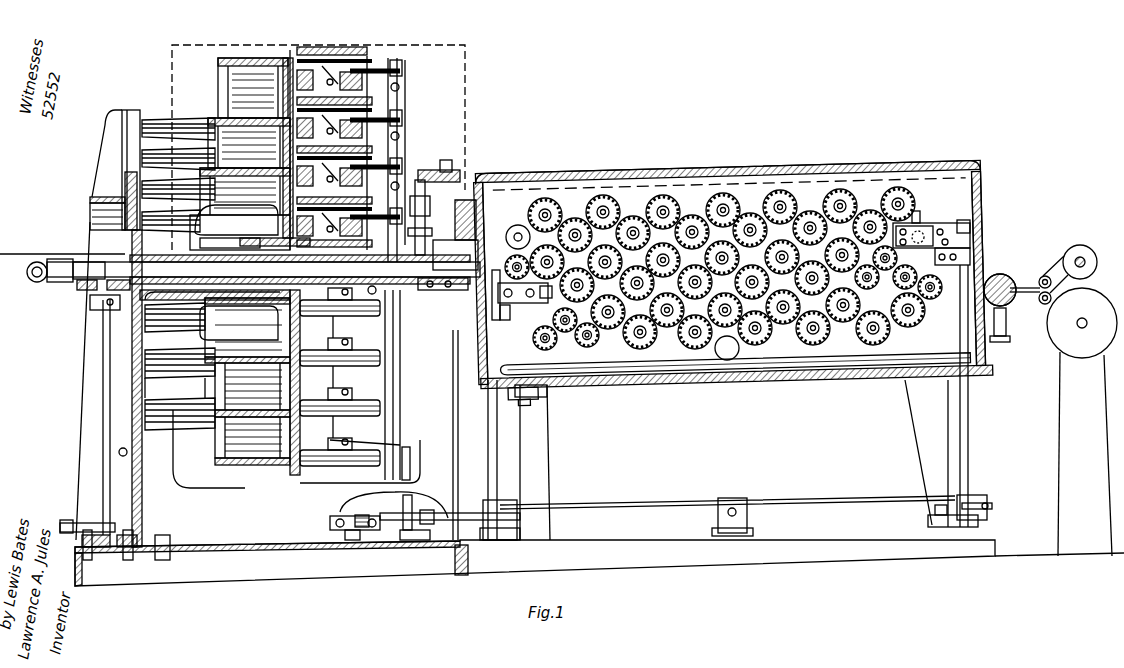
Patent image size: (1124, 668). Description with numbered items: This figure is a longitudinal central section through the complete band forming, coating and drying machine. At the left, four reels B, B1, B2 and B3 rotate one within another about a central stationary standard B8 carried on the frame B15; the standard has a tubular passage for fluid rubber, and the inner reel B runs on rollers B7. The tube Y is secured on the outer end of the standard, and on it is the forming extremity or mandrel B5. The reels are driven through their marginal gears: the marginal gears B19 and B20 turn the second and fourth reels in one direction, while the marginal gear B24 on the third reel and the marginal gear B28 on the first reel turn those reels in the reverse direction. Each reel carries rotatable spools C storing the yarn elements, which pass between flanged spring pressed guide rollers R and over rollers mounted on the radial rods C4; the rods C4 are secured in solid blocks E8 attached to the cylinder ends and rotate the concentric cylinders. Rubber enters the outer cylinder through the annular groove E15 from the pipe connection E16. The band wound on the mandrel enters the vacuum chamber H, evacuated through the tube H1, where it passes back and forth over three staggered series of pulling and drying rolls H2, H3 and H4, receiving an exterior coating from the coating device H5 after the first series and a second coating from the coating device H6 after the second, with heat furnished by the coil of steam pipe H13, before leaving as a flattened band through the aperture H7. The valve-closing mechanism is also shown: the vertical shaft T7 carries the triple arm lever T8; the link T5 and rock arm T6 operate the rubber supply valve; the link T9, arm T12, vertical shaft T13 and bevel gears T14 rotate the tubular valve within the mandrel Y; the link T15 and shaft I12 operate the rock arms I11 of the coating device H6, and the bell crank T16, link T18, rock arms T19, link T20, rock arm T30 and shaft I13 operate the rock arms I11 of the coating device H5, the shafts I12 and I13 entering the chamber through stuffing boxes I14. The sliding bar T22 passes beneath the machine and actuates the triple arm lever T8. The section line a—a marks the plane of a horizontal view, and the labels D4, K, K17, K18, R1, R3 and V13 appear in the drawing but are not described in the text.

The section line a— a is at (1000, 178).
The inner reel B is at (190, 220).
The second reel B1 is at (215, 160).
The third reel B2 is at (238, 120).
The fourth reel B3 is at (248, 58).
The forming extremity or mandrel B5 is at (364, 285).
The rollers B7 is at (248, 240).
The central stationary standard B8 is at (215, 289).
The frame B15 is at (90, 385).
The marginal gear B19 is at (245, 480).
The marginal gear B20 is at (208, 380).
The marginal gear B24 is at (222, 420).
The marginal gear B28 is at (140, 335).
The rotatable spools C is at (345, 48).
The radial rods C4 is at (412, 320).
The main shaft D4 is at (65, 285).
The solid block E8 is at (443, 292).
The annular groove E15 is at (465, 200).
The pipe connection E16 is at (478, 190).
The vacuum chamber H is at (880, 172).
The suction tube H1 is at (512, 232).
The first series of pulling and drying rolls H2 is at (698, 215).
The second series of pulling and drying rolls H3 is at (768, 340).
The third series of pulling and drying rolls H4 is at (690, 350).
The coating device H5 is at (930, 220).
The second coating device H6 is at (530, 350).
The aperture H7 is at (1010, 275).
The coil of steam pipe H13 is at (810, 345).
The rock arms I11 is at (520, 305).
The shaft I12 is at (488, 484).
The shaft I13 is at (970, 438).
The stuffing boxes I14 is at (458, 425).
The roller K is at (1048, 275).
The wheel K17 is at (1075, 360).
The pulley K18 is at (1088, 256).
The flanged spring pressed guide rollers R is at (430, 295).
The gear R1 is at (508, 232).
The lever R3 is at (460, 290).
The link T5 is at (435, 200).
The rock arm T6 is at (445, 170).
The vertical shaft T7 is at (412, 470).
The triple arm lever T8 is at (388, 530).
The link T9 is at (358, 510).
The arm T12 is at (90, 520).
The vertical shaft T13 is at (100, 455).
The bevel gears T14 is at (120, 238).
The link T15 is at (425, 530).
The bell crank T16 is at (470, 516).
The link T18 is at (640, 505).
The rock arms T19 is at (715, 510).
The link T20 is at (790, 500).
The sliding bar T22 is at (355, 530).
The rock arm T30 is at (980, 497).
The gear V13 is at (610, 200).
The tube Y is at (360, 380).